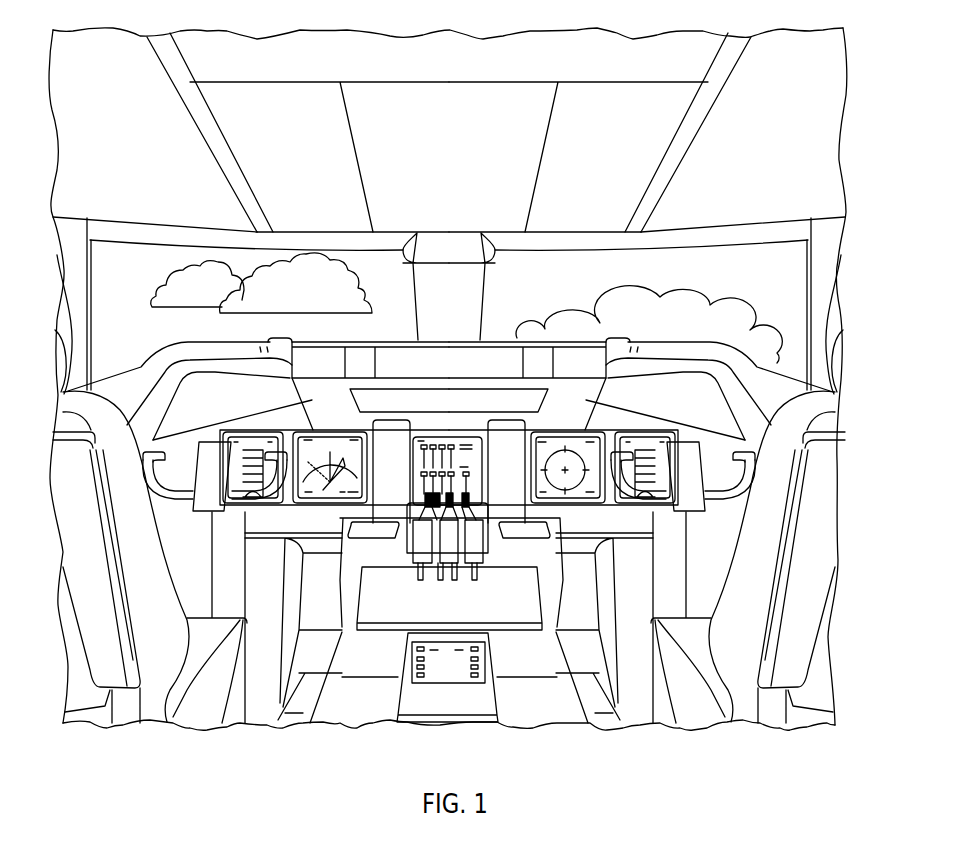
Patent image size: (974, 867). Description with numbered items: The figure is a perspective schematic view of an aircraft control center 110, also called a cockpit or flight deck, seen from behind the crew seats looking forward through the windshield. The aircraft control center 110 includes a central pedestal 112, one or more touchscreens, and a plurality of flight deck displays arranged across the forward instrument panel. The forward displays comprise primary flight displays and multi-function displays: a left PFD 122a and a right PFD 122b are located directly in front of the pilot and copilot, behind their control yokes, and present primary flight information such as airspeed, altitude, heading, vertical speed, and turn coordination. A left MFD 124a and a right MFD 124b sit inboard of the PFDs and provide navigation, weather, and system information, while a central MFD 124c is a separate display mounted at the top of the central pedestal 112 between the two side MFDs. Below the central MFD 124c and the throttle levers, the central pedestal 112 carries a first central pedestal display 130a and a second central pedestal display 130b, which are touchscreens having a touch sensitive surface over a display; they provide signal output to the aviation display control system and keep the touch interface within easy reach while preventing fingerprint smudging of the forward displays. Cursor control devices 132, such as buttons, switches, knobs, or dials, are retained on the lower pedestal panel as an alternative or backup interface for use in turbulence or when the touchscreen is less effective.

The aircraft control center 110 is at (888, 134).
The central pedestal 112 is at (357, 660).
The left PFD 122a is at (251, 432).
The right PFD 122b is at (640, 433).
The left MFD 124a is at (314, 432).
The right MFD 124b is at (540, 432).
The central MFD 124c is at (435, 445).
The first central pedestal display 130a is at (523, 532).
The second central pedestal display 130b is at (448, 683).
The cursor control devices 132 is at (483, 657).